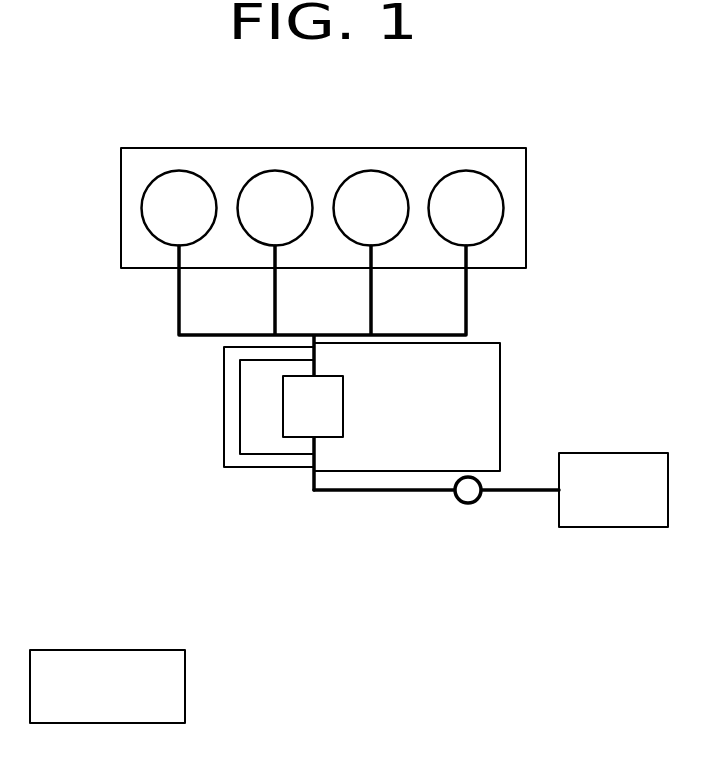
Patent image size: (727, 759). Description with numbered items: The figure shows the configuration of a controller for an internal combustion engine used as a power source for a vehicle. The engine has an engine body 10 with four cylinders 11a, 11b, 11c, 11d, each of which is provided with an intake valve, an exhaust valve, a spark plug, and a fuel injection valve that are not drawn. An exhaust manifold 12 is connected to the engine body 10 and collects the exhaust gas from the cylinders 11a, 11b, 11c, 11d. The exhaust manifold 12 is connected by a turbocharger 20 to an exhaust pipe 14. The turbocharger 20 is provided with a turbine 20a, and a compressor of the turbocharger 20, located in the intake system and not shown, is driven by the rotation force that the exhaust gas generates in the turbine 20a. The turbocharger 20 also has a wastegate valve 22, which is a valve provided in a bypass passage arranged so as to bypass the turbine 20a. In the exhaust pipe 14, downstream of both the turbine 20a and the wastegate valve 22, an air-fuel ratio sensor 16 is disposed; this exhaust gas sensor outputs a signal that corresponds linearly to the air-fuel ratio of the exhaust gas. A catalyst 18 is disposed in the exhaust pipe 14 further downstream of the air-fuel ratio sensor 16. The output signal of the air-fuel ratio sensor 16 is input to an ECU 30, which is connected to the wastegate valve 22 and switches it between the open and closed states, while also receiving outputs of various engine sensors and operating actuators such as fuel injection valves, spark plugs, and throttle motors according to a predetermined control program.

The engine body 10 is at (121, 209).
The cylinder 11a is at (200, 172).
The cylinder 11b is at (295, 174).
The cylinder 11c is at (391, 174).
The cylinder 11d is at (486, 174).
The exhaust manifold 12 is at (178, 306).
The exhaust pipe 14 is at (385, 492).
The air-fuel ratio sensor 16 is at (468, 503).
The catalyst 18 is at (613, 527).
The turbocharger 20 is at (500, 404).
The turbine 20a is at (295, 438).
The wastegate valve 22 is at (224, 415).
The ECU 30 is at (186, 688).